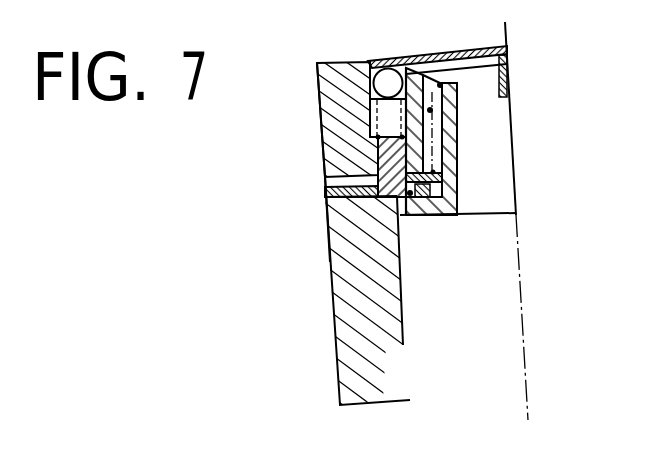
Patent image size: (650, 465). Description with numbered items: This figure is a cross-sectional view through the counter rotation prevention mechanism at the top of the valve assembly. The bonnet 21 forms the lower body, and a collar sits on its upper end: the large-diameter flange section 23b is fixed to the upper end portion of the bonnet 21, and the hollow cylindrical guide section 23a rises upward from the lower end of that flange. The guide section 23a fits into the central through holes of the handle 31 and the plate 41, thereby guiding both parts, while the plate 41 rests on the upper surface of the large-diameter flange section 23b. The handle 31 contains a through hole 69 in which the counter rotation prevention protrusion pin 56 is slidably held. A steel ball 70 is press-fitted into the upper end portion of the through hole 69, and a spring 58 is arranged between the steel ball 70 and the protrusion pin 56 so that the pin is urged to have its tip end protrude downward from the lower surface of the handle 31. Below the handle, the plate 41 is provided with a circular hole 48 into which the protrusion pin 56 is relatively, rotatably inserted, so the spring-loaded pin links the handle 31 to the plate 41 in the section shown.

The handle 31 is at (350, 110).
The steel ball 70 is at (394, 54).
The spring 58 is at (321, 98).
The through hole 69 is at (339, 116).
The counter rotation prevention protrusion pin 56 is at (336, 162).
The plate 41 is at (319, 178).
The circular hole 48 is at (318, 219).
The bonnet 21 is at (344, 262).
The hollow cylindrical guide section 23a is at (496, 146).
The large-diameter flange section 23b is at (502, 180).